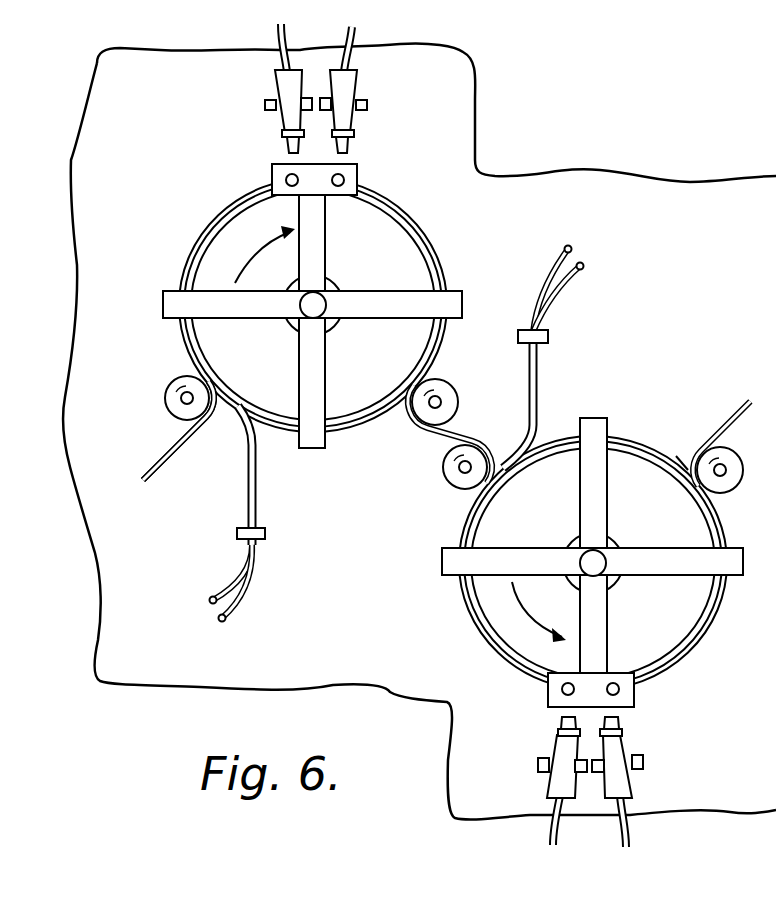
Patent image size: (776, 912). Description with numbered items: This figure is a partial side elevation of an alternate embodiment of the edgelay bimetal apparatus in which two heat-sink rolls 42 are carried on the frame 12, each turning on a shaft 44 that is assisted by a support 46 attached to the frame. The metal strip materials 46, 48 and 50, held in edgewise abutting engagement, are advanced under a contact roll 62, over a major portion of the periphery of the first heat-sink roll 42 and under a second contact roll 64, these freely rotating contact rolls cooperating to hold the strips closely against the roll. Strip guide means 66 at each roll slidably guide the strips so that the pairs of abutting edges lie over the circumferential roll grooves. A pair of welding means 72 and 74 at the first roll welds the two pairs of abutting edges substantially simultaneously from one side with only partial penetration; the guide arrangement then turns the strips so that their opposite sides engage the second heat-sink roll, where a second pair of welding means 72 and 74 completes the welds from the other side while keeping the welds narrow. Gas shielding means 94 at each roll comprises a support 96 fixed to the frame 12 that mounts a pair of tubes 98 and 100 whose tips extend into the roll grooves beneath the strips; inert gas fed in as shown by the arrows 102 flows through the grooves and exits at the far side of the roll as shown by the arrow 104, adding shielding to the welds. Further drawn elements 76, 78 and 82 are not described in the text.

The frame 12 is at (92, 215).
The heat-sink roll 42 is at (403, 243).
The shaft 44 is at (323, 312).
The support 46 is at (305, 449).
The metal strip 48 is at (160, 458).
The metal strip 50 is at (178, 431).
The contact roll 62 is at (172, 388).
The contact roll 64 is at (448, 392).
The strip guide means 66 is at (360, 177).
The welding means 72 is at (283, 81).
The welding means 74 is at (352, 78).
The nozzle tab 76 is at (266, 105).
The nozzle tab 78 is at (366, 106).
The web strip 82 is at (745, 412).
The gas shielding means 94 is at (259, 569).
The support 96 is at (265, 535).
The tube 98 is at (238, 579).
The tube 100 is at (233, 610).
The arrows 102 is at (206, 605).
The arrow 104 is at (393, 414).